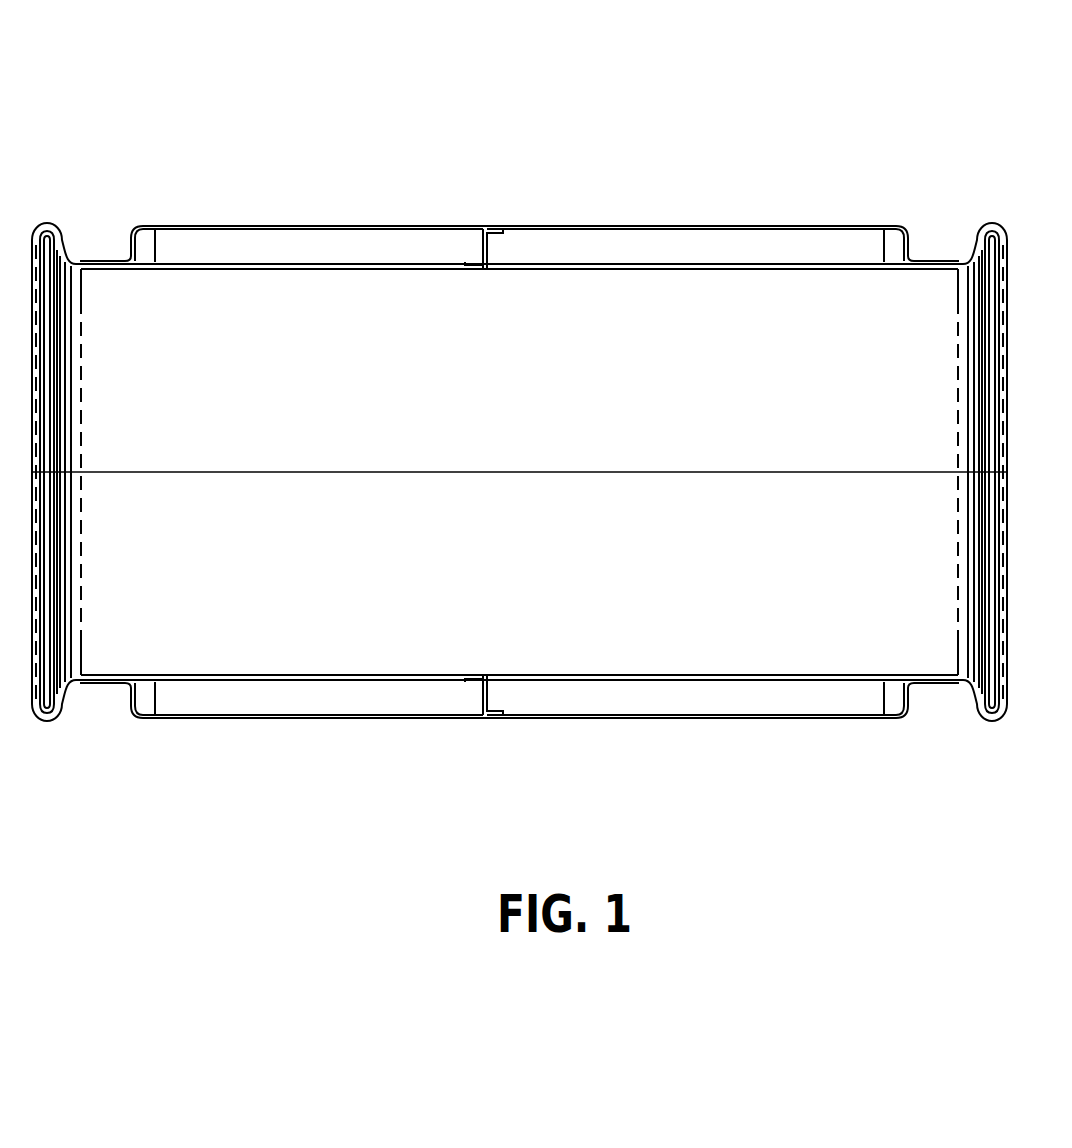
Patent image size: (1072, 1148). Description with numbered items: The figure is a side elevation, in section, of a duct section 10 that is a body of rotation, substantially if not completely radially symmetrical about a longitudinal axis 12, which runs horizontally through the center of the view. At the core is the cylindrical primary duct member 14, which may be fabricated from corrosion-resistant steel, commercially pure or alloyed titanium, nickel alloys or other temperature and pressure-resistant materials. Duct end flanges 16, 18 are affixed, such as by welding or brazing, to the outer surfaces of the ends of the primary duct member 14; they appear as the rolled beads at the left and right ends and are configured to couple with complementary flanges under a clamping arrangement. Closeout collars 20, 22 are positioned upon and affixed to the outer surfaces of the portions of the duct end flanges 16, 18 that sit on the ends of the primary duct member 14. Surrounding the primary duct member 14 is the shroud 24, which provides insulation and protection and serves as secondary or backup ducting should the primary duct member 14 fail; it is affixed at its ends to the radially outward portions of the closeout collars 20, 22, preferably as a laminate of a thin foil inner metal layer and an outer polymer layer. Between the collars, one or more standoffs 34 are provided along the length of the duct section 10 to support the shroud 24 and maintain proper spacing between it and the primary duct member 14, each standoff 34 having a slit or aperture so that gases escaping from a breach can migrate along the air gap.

The duct section 10 is at (608, 748).
The longitudinal axis 12 is at (652, 485).
The primary duct member 14 is at (374, 245).
The duct end flange 16 is at (50, 203).
The duct end flange 18 is at (992, 212).
The closeout collar 20 is at (117, 238).
The closeout collar 22 is at (911, 215).
The shroud 24 is at (293, 203).
The standoff 34 is at (495, 232).